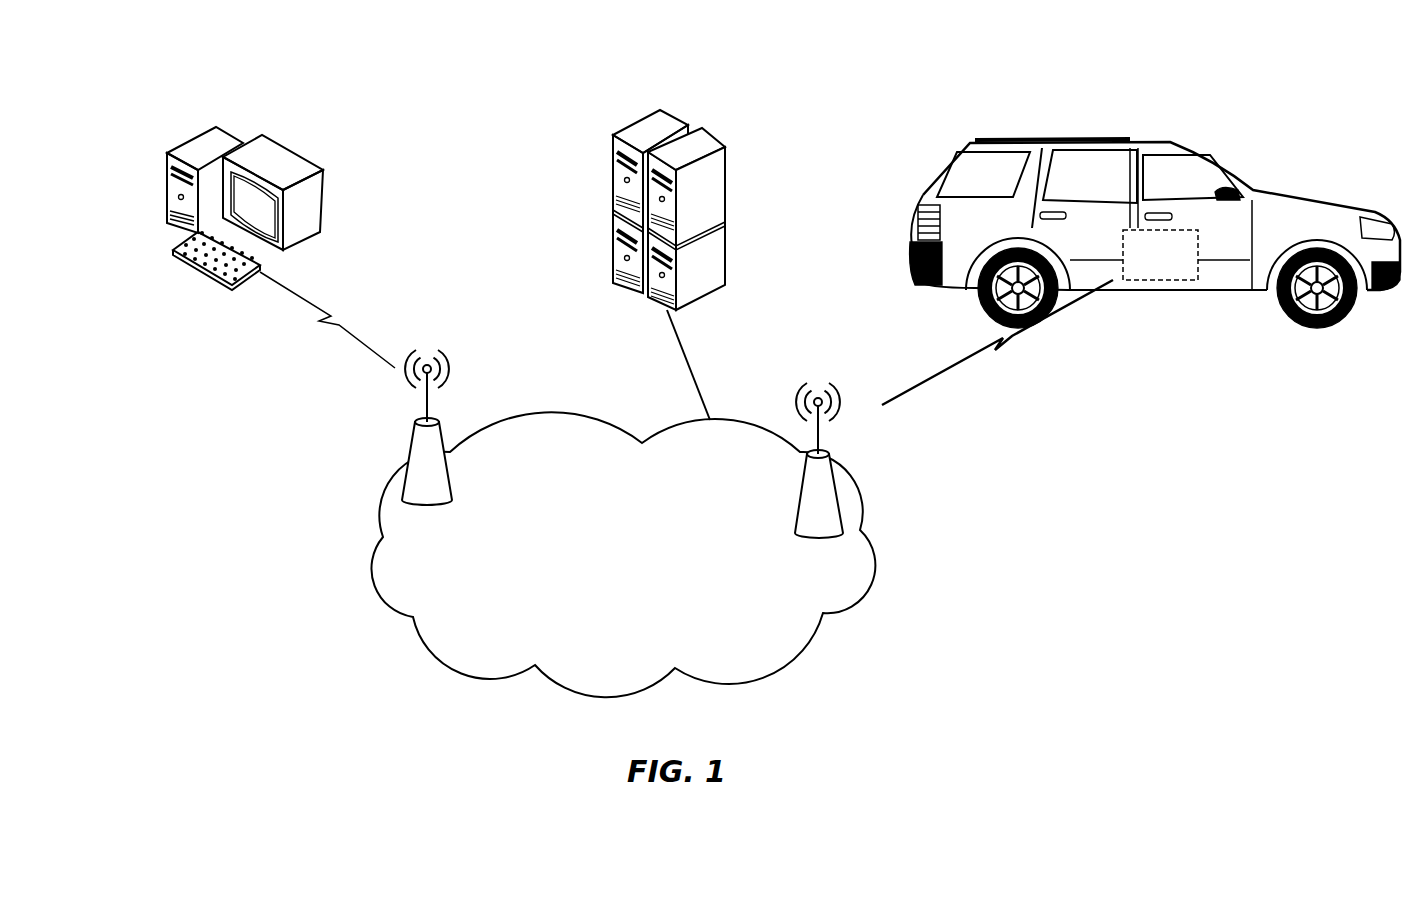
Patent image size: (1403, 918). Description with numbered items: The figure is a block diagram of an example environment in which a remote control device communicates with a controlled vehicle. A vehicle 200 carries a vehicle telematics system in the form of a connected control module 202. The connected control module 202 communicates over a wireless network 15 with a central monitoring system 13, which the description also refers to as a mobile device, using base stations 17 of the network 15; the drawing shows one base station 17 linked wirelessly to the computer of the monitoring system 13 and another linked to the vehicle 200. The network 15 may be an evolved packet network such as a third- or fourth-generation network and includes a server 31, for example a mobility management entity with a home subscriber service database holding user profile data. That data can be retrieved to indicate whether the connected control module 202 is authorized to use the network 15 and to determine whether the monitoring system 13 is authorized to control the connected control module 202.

The central monitoring system 13 is at (167, 193).
The wireless network 15 is at (508, 418).
The base stations 17 is at (412, 446).
The server 31 is at (728, 175).
The vehicle 200 is at (1198, 110).
The connected control module 202 is at (1140, 281).